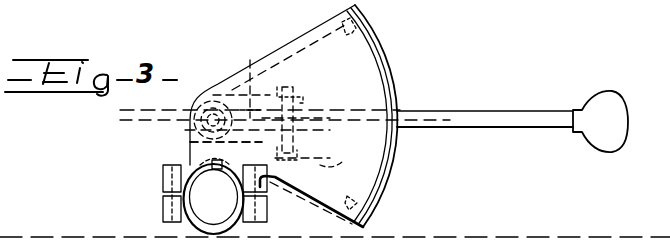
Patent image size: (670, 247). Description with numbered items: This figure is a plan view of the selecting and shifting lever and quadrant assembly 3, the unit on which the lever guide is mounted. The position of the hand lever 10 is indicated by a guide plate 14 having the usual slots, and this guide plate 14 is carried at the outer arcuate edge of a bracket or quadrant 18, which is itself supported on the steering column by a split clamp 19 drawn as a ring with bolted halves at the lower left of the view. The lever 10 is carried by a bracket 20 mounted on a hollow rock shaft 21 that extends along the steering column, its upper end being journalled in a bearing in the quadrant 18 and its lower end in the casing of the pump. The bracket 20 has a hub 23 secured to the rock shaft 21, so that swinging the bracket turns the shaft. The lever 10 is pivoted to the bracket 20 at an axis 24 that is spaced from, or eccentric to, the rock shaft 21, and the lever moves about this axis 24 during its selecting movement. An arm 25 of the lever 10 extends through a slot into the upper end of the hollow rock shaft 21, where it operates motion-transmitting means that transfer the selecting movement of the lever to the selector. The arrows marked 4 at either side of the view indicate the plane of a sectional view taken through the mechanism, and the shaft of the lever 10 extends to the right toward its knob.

The sector plate 3 is at (252, 0).
The section line 4- 4 is at (107, 118).
The hand lever 10 is at (514, 125).
The guide plate 14 is at (400, 116).
The bracket or quadrant 18 is at (366, 85).
The split clamp 19 is at (162, 188).
The bracket 20 is at (265, 163).
The hollow rock shaft 21 is at (205, 100).
The hub 23 is at (213, 132).
The pivot axis 24 is at (311, 120).
The arm 25 is at (250, 60).